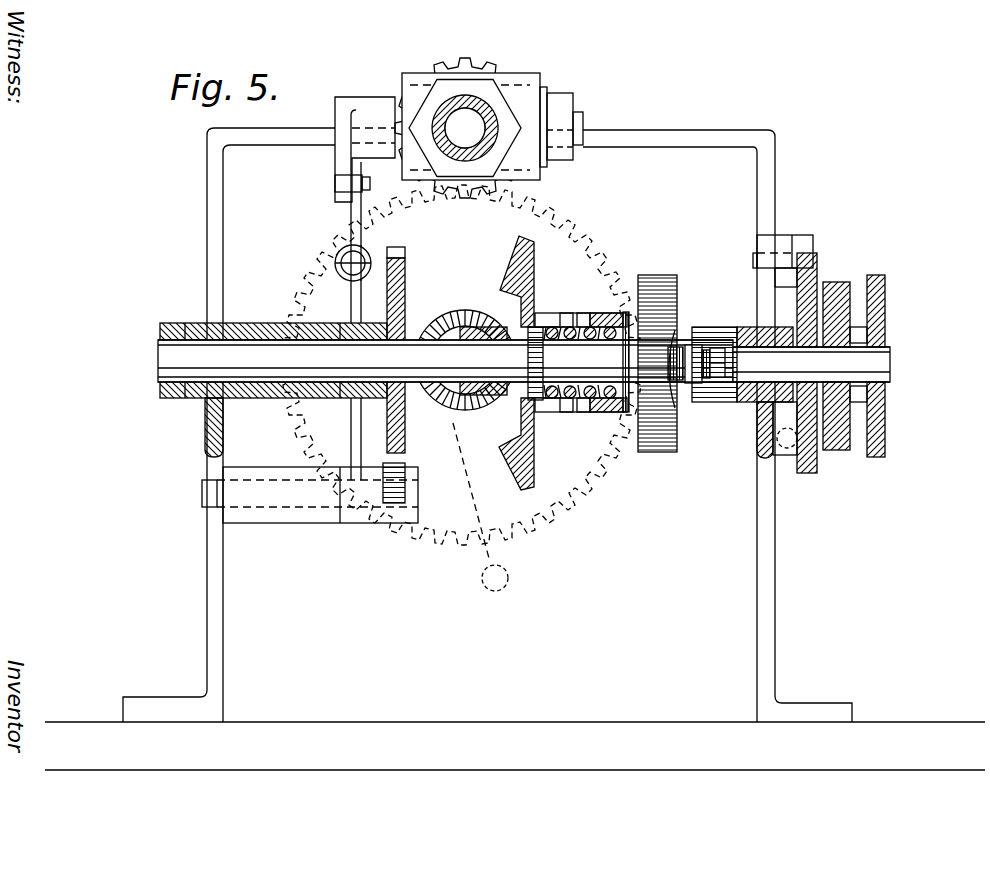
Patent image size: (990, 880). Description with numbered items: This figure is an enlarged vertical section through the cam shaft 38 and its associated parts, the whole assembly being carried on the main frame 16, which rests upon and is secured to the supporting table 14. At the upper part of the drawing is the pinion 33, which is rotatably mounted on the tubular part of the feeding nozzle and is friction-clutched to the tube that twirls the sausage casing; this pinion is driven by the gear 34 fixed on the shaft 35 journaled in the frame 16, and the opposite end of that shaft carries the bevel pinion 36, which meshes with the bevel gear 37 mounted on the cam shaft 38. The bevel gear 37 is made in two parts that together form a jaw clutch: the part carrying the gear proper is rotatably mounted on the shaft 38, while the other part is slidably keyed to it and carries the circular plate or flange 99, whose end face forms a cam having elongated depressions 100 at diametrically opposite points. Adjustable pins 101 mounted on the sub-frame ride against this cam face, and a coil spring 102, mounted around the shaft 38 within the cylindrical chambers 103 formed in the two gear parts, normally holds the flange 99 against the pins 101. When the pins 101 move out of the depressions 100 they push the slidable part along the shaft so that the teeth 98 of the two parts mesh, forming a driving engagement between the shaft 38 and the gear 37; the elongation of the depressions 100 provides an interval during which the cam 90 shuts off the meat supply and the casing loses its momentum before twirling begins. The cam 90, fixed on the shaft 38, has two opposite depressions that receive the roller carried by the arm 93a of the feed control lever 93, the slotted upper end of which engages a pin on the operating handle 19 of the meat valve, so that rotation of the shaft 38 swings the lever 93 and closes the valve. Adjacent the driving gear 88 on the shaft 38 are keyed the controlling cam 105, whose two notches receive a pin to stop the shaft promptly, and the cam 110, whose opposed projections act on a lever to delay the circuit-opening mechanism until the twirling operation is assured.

The supporting table 14 is at (632, 724).
The main frame 16 is at (205, 423).
The operating handle 19 is at (338, 152).
The pinion 33 is at (490, 66).
The gear 34 is at (603, 232).
The shaft 35 is at (480, 507).
The bevel pinion 36 is at (453, 413).
The bevel gear 37 is at (533, 487).
The cam shaft 38 is at (890, 360).
The driving gear 88 is at (837, 450).
The cam 90 is at (405, 272).
The feed control lever 93 is at (350, 415).
The arm of the feed control lever 93a is at (383, 503).
The teeth 98 is at (577, 313).
The circular plate or flange 99 is at (652, 280).
The depressions 100 is at (672, 335).
The adjustable pins 101 is at (680, 380).
The coil spring 102 is at (600, 400).
The cylindrical chambers 103 is at (548, 322).
The controlling cam 105 is at (880, 457).
The cam 110 is at (805, 473).